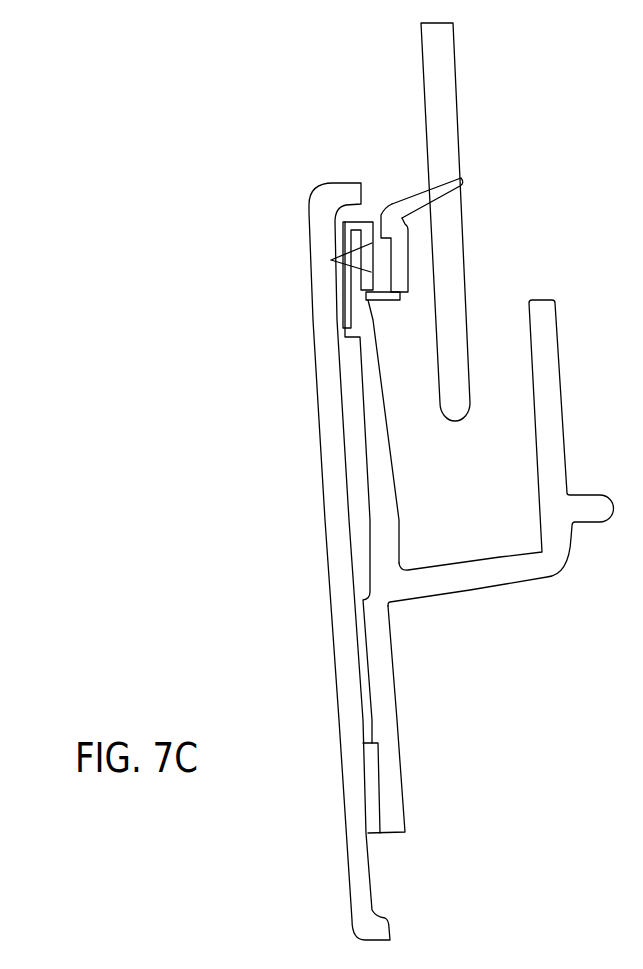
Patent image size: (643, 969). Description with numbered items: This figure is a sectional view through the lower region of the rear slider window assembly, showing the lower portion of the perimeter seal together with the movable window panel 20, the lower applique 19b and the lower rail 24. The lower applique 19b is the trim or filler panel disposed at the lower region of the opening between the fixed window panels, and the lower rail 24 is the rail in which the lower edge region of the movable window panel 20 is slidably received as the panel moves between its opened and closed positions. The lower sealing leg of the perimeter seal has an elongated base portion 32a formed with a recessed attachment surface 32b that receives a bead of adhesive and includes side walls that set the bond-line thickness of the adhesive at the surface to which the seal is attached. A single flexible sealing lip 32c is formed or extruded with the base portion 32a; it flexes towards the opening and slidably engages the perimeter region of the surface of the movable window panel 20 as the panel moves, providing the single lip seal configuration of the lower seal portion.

The movable window panel 20 is at (457, 127).
The lower applique 19b is at (330, 520).
The lower rail 24 is at (498, 582).
The base portion 32a is at (387, 302).
The attachment surface 32b is at (373, 272).
The sealing lip 32c is at (418, 198).